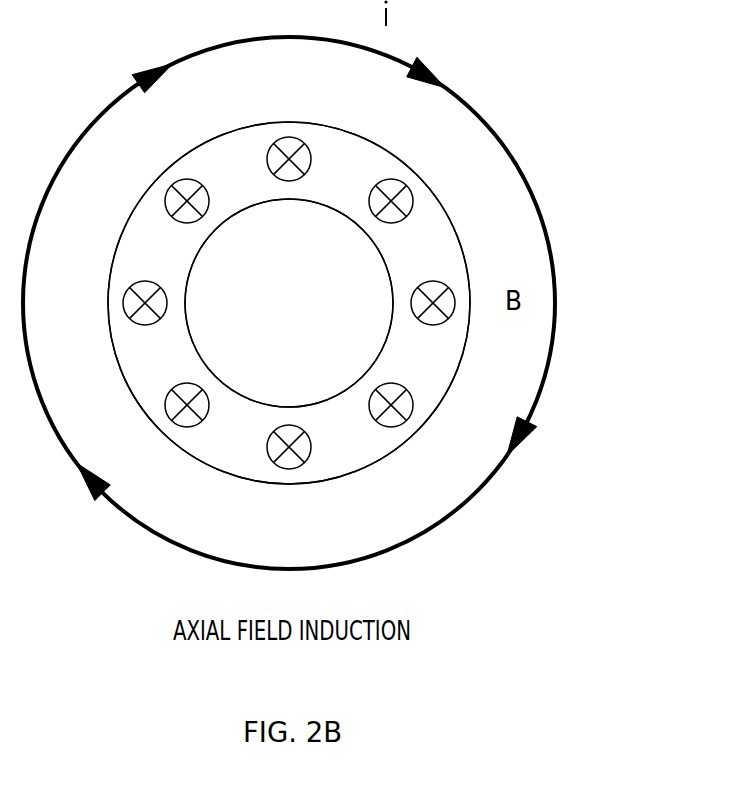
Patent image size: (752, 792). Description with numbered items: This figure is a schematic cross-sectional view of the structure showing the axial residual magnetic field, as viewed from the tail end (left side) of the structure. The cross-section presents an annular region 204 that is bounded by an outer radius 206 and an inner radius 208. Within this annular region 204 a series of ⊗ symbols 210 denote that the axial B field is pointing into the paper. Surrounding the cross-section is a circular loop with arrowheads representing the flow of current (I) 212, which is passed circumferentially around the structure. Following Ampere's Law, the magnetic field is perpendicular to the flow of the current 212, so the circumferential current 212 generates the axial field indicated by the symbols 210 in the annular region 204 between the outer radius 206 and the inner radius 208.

The annular region 204 is at (430, 237).
The outer radius 206 is at (469, 325).
The inner radius 208 is at (382, 354).
The axial B field symbols 210 is at (450, 290).
The current 212 is at (490, 123).